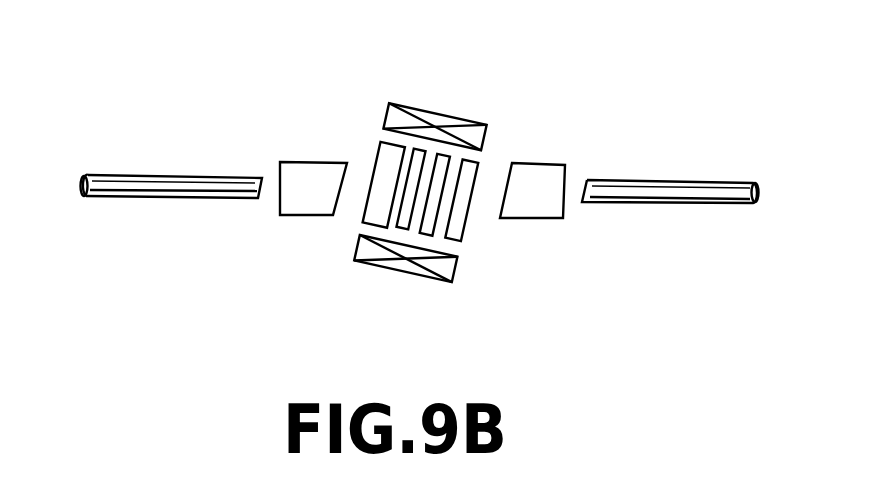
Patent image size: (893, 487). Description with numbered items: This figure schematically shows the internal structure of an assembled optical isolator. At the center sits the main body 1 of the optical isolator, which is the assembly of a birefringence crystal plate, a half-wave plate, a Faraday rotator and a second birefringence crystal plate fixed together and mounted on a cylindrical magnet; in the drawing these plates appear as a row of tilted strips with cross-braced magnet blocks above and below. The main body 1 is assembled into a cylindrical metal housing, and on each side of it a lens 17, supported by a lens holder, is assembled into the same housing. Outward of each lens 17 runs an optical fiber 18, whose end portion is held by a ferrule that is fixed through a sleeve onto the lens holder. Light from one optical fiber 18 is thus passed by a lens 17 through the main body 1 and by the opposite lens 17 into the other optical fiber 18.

The main body of the optical isolator 1 is at (524, 100).
The lens 17 is at (303, 163).
The optical fiber 18 is at (180, 183).